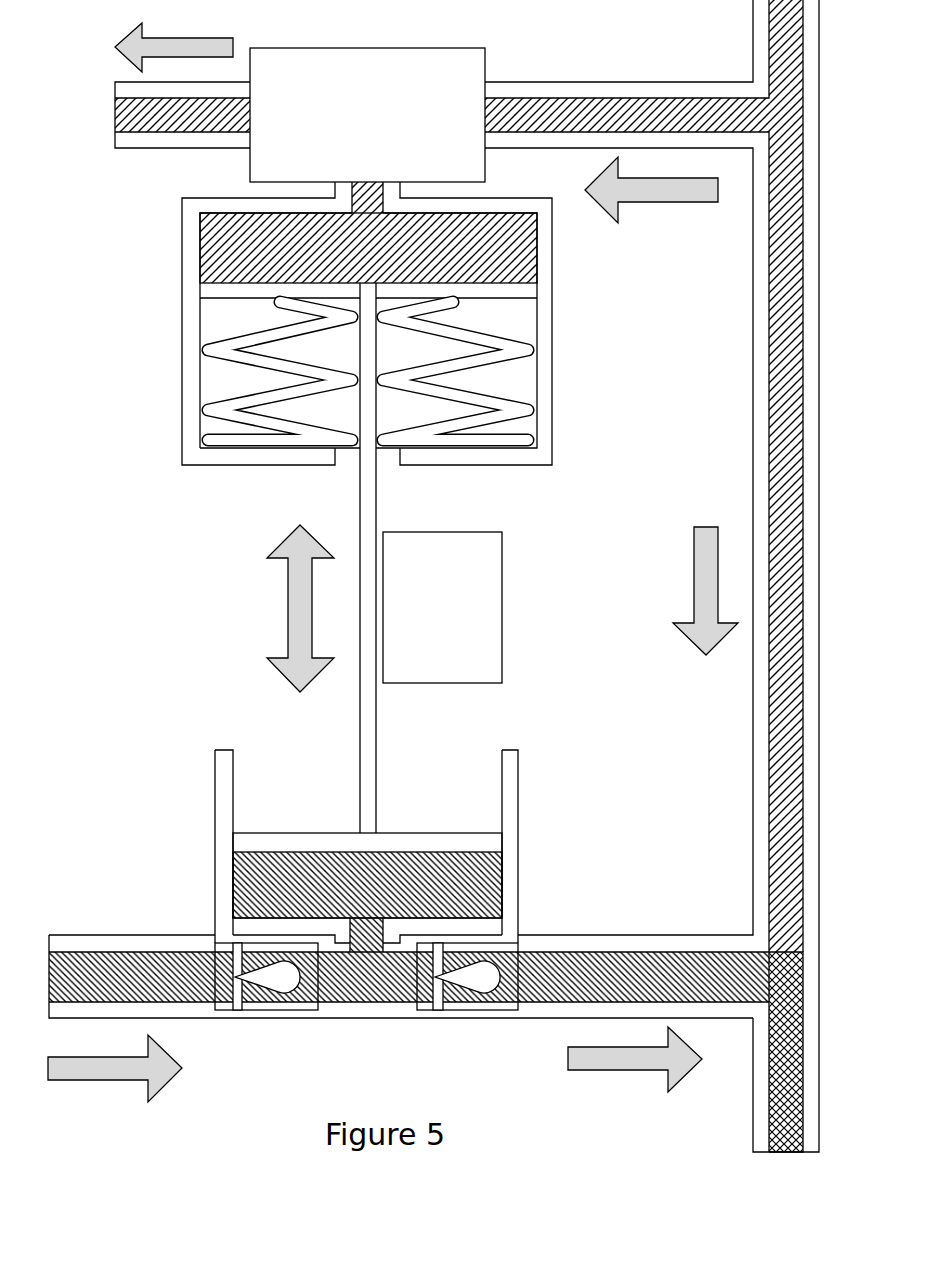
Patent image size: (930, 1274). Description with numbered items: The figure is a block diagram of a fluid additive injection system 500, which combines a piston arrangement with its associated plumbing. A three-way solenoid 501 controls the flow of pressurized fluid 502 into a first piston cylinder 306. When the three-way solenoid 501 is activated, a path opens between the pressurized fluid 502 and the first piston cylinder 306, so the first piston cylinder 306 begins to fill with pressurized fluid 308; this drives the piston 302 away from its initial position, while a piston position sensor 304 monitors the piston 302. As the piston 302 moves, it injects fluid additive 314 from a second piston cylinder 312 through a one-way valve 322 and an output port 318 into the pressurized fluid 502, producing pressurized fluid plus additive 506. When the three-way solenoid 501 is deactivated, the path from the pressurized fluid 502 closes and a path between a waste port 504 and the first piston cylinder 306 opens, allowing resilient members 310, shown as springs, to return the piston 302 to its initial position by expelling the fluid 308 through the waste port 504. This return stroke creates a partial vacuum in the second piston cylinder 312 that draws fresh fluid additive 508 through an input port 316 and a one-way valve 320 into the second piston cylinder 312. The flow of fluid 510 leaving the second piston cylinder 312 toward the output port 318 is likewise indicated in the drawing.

The fluid additive injection system 500 is at (115, 526).
The three-way solenoid 501 is at (367, 115).
The pressurized fluid 502 is at (623, 108).
The waste port 504 is at (148, 124).
The pressurized fluid plus additive 506 is at (785, 1076).
The fresh fluid additive 508 is at (84, 970).
The outlet flow 510 is at (642, 966).
The piston 302 is at (382, 830).
The piston position sensor 304 is at (442, 607).
The first piston cylinder 306 is at (552, 466).
The pressurized fluid 308 is at (215, 240).
The resilient members 310 is at (211, 398).
The second piston cylinder 312 is at (516, 748).
The fluid additive 314 is at (484, 884).
The input port 316 is at (65, 934).
The output port 318 is at (737, 934).
The one-way valve 320 is at (265, 1010).
The one-way valve 322 is at (452, 1010).